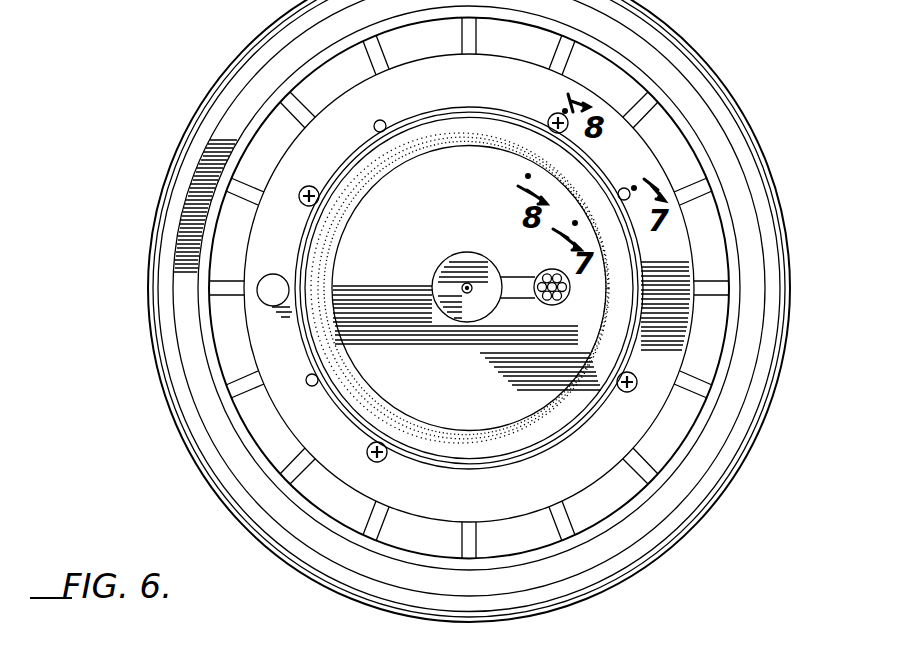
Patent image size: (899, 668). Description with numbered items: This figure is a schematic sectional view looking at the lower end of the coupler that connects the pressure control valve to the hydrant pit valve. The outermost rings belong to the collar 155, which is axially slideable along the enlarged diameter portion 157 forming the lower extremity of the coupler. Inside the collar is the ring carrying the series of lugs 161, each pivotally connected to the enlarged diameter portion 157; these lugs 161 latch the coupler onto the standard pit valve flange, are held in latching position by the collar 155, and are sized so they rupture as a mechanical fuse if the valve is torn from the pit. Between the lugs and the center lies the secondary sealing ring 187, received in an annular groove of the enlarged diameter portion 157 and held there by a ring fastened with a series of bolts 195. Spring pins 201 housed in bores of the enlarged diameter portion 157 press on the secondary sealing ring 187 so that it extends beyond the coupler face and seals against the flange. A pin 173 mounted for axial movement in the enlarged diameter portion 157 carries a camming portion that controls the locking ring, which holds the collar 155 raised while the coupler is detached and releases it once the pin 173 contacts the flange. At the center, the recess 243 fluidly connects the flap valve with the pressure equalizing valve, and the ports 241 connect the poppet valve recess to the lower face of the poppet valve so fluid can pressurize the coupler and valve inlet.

The collar 155 is at (183, 143).
The enlarged diameter portion 157 is at (688, 332).
The lugs 161 is at (720, 278).
The secondary sealing ring 187 is at (584, 412).
The recess 243 is at (468, 253).
The ports 241 is at (556, 304).
The pin 173 is at (279, 275).
The bolts 195 is at (318, 168).
The spring pin 201 is at (382, 121).